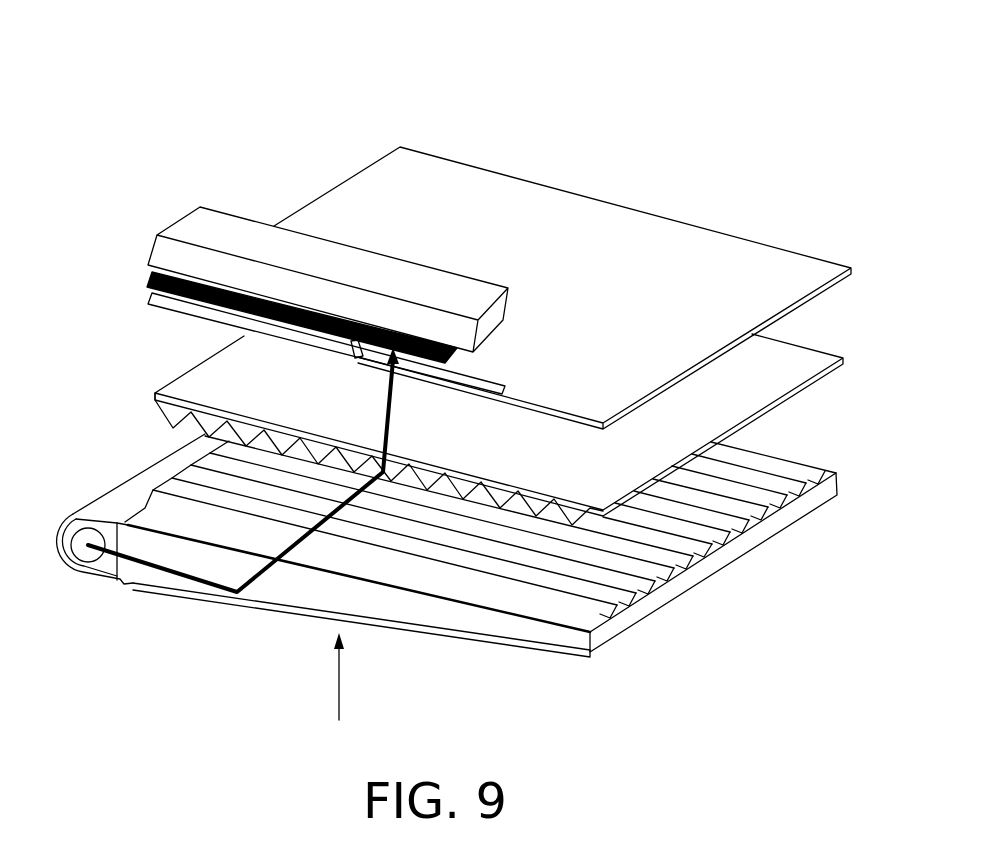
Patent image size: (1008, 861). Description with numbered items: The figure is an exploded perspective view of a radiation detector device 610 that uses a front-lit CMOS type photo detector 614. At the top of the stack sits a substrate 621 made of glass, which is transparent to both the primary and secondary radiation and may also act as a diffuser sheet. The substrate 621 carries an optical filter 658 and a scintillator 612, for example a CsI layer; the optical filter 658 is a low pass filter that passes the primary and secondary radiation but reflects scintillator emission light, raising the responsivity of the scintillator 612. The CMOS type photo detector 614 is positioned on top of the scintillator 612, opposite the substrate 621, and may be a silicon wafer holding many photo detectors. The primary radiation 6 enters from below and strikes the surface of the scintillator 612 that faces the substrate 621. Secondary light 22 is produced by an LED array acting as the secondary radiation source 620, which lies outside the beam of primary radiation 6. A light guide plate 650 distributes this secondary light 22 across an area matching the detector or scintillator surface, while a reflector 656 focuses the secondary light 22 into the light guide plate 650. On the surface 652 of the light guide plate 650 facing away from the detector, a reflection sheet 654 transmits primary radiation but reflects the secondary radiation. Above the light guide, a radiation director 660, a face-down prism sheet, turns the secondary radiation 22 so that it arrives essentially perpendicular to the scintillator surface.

The radiation detector device 610 is at (726, 76).
The substrate 621 is at (781, 259).
The radiation director 660 is at (822, 355).
The CMOS type photo detector 614 is at (490, 318).
The scintillator 612 is at (151, 280).
The optical filter 658 is at (165, 305).
The secondary light 22 is at (248, 592).
The light guide plate 650 is at (547, 628).
The reflection sheet 654 is at (403, 633).
The reflector 656 is at (110, 567).
The secondary radiation source 620 is at (82, 553).
The surface of the light guide plate 652 is at (615, 632).
The primary radiation 6 is at (337, 696).